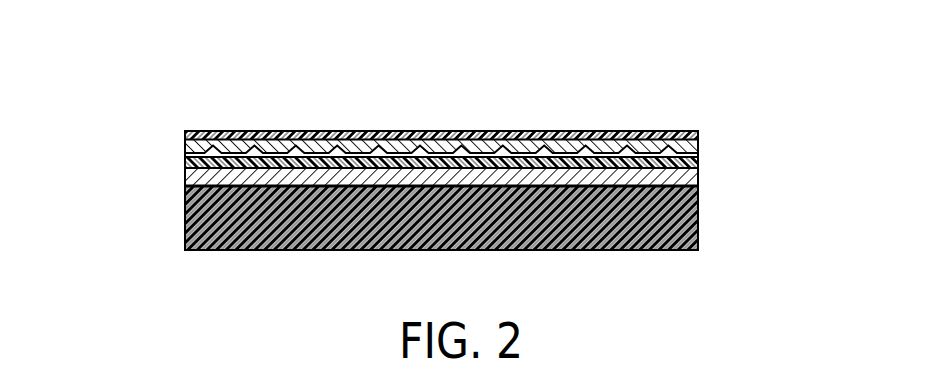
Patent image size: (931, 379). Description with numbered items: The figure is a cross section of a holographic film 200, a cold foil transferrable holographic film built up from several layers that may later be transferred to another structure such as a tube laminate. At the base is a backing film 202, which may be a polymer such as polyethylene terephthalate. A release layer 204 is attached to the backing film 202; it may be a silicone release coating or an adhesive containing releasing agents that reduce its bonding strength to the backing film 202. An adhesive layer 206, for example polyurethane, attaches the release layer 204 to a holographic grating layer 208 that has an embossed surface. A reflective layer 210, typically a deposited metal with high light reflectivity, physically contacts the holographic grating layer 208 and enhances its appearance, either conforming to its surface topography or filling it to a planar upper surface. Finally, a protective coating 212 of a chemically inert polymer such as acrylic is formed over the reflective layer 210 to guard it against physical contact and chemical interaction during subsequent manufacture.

The holographic film 200 is at (100, 123).
The backing film 202 is at (698, 228).
The release layer 204 is at (698, 178).
The adhesive layer 206 is at (698, 160).
The holographic grating layer 208 is at (698, 152).
The reflective layer 210 is at (698, 142).
The protective coating 212 is at (698, 135).